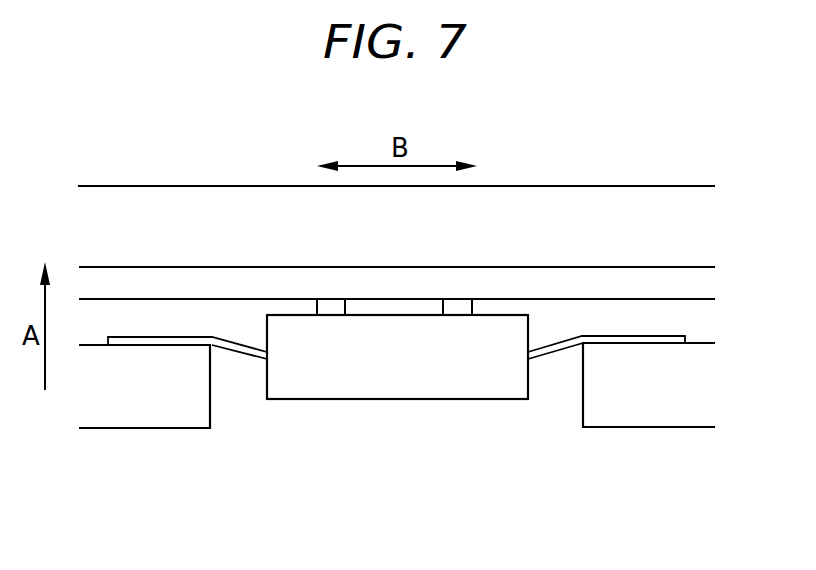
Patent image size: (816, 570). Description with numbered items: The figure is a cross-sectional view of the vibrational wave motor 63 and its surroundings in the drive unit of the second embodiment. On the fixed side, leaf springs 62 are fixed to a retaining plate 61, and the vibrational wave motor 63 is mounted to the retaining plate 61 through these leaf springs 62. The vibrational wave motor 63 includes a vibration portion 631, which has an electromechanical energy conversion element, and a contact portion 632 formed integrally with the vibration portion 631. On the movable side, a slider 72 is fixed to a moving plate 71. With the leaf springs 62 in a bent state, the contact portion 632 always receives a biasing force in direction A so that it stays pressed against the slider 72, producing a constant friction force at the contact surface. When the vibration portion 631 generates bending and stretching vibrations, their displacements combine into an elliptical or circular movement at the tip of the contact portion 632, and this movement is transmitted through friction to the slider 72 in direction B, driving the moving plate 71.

The moving plate 71 is at (130, 220).
The slider 72 is at (533, 282).
The retaining plate 61 is at (623, 403).
The leaf spring 62 is at (658, 340).
The vibrational wave motor 63 is at (397, 415).
The vibration portion 631 is at (365, 377).
The contact portion 632 is at (462, 305).